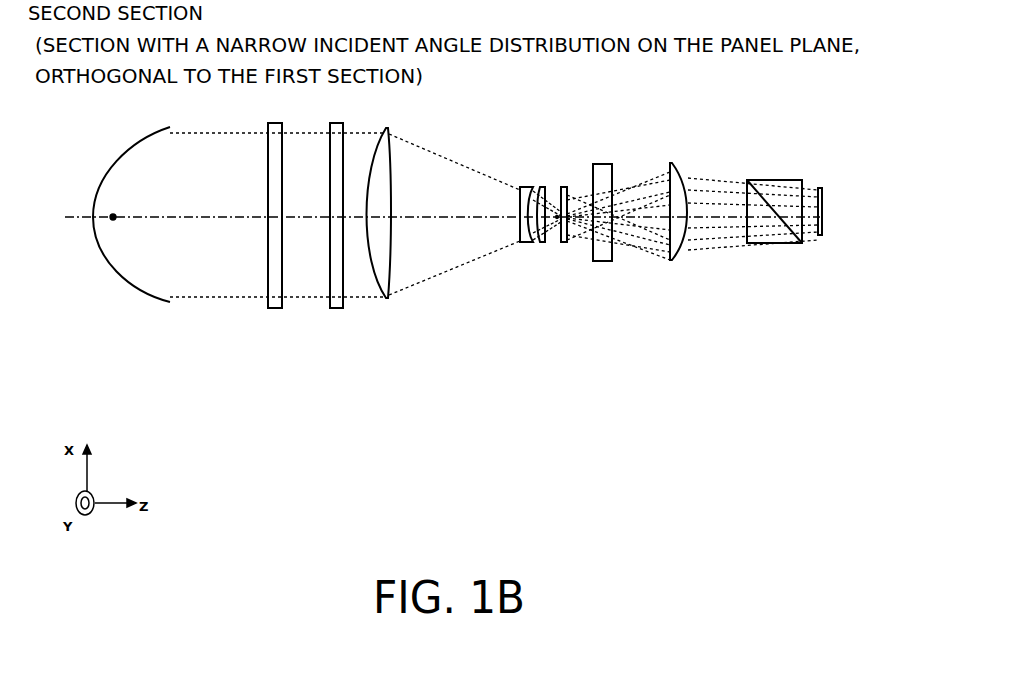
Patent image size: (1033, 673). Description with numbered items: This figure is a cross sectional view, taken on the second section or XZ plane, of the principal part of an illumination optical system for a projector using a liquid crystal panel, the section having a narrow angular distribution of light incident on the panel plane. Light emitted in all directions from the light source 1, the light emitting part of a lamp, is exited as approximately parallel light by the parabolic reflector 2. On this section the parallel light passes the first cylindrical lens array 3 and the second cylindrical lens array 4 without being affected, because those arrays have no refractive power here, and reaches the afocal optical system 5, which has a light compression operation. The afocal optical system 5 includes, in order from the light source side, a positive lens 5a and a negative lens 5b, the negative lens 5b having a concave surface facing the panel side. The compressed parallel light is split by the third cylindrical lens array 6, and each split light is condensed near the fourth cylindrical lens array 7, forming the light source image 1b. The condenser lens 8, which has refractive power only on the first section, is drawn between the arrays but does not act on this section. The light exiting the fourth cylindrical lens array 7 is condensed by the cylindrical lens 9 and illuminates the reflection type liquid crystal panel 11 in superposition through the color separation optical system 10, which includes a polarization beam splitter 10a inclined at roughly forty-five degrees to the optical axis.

The light source 1 is at (112, 219).
The light source image 1b is at (557, 203).
The parabolic reflector 2 is at (140, 287).
The first cylindrical lens array 3 is at (272, 300).
The second cylindrical lens array 4 is at (334, 303).
The afocal optical system 5 is at (450, 231).
The positive lens 5a is at (392, 137).
The negative lens 5b is at (519, 188).
The third cylindrical lens array 6 is at (541, 244).
The fourth cylindrical lens array 7 is at (563, 244).
The condenser lens 8 is at (602, 262).
The cylindrical lens 9 is at (676, 262).
The color separation optical system 10 is at (774, 247).
The polarization beam splitter 10a is at (750, 183).
The liquid crystal panel 11 is at (822, 237).